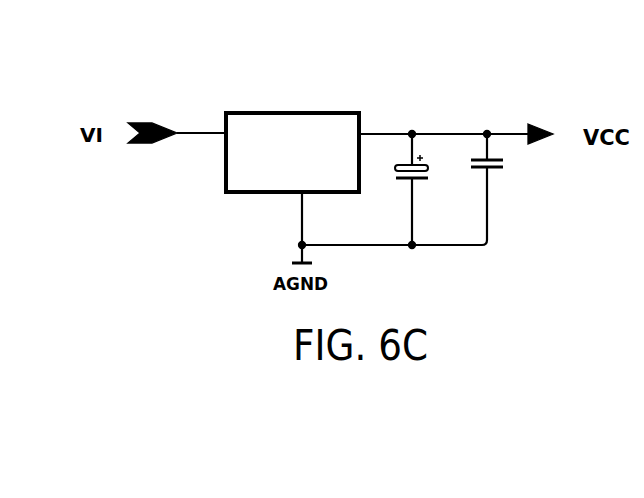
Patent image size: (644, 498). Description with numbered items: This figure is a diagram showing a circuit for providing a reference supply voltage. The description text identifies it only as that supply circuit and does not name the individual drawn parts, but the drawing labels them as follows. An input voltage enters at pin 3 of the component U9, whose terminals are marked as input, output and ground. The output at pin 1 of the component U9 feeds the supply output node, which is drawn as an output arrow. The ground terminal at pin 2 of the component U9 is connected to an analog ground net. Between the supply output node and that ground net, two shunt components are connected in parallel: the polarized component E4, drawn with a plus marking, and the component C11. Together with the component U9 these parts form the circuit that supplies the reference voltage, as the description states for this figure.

The voltage regulator U9 is at (292, 136).
The electrolytic capacitor E4 is at (421, 189).
The capacitor C11 is at (505, 187).
The Vout pin 1 is at (443, 128).
The GND pin 2 is at (295, 218).
The Vin pin 3 is at (201, 127).